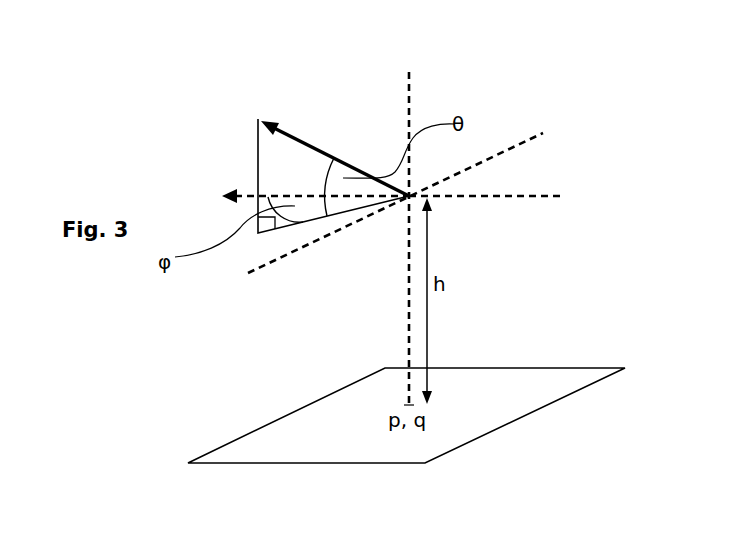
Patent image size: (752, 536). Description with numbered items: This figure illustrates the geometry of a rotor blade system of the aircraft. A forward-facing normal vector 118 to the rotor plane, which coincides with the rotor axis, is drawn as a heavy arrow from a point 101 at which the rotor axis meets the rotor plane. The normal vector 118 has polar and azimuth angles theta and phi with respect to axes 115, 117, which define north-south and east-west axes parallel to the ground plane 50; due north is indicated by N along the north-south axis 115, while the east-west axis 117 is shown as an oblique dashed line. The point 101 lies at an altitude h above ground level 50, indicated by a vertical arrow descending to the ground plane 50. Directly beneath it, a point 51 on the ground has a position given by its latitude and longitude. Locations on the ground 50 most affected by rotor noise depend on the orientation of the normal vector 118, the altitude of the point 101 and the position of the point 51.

The forward-facing normal vector 118 is at (290, 124).
The north-south axis 115 is at (227, 187).
The east-west axis 117 is at (248, 272).
The point 101 is at (440, 194).
The ground plane 50 is at (542, 380).
The point on the ground 51 is at (410, 405).